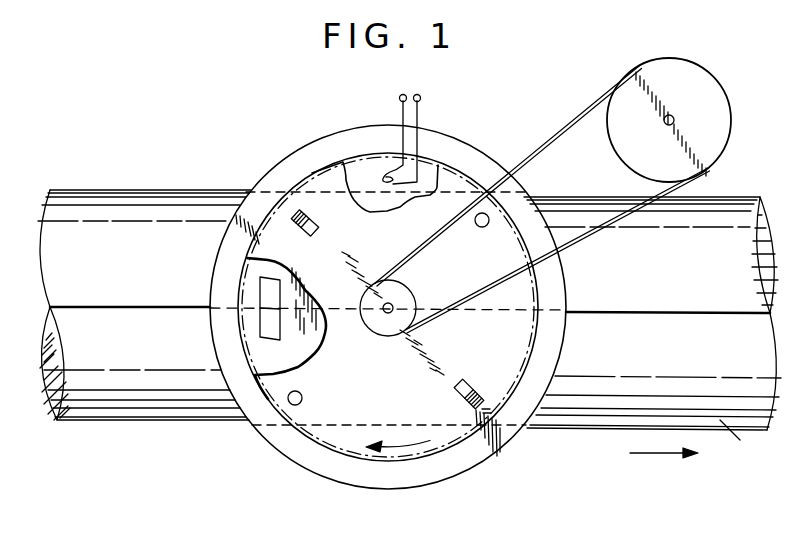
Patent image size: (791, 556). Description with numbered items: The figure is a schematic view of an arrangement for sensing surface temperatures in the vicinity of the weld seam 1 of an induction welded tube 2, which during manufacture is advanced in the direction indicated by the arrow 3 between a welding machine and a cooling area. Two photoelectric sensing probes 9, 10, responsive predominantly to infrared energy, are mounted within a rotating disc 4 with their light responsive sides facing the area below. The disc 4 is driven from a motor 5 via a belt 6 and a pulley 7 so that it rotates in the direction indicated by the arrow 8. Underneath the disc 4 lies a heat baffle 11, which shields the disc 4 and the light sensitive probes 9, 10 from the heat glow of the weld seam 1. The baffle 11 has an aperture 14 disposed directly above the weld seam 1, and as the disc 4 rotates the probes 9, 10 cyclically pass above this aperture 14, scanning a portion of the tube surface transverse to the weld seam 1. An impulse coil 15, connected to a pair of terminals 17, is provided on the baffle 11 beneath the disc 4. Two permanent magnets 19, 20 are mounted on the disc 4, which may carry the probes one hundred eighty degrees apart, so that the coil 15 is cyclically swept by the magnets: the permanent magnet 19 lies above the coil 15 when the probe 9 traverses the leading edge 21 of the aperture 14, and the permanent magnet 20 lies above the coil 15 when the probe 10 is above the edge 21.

The weld seam 1 is at (130, 306).
The induction welded tube 2 is at (718, 420).
The arrow 3 is at (658, 455).
The rotating disc 4 is at (378, 385).
The motor 5 is at (685, 62).
The belt 6 is at (590, 108).
The pulley 7 is at (388, 282).
The arrow 8 is at (407, 445).
The photoelectric sensing probe 9 is at (302, 398).
The photoelectric sensing probe 10 is at (483, 227).
The heat baffle 11 is at (322, 465).
The aperture 14 is at (268, 318).
The impulse coil 15 is at (390, 185).
The terminals 17 is at (415, 95).
The permanent magnet 19 is at (308, 216).
The permanent magnet 20 is at (478, 386).
The leading edge 21 is at (260, 336).